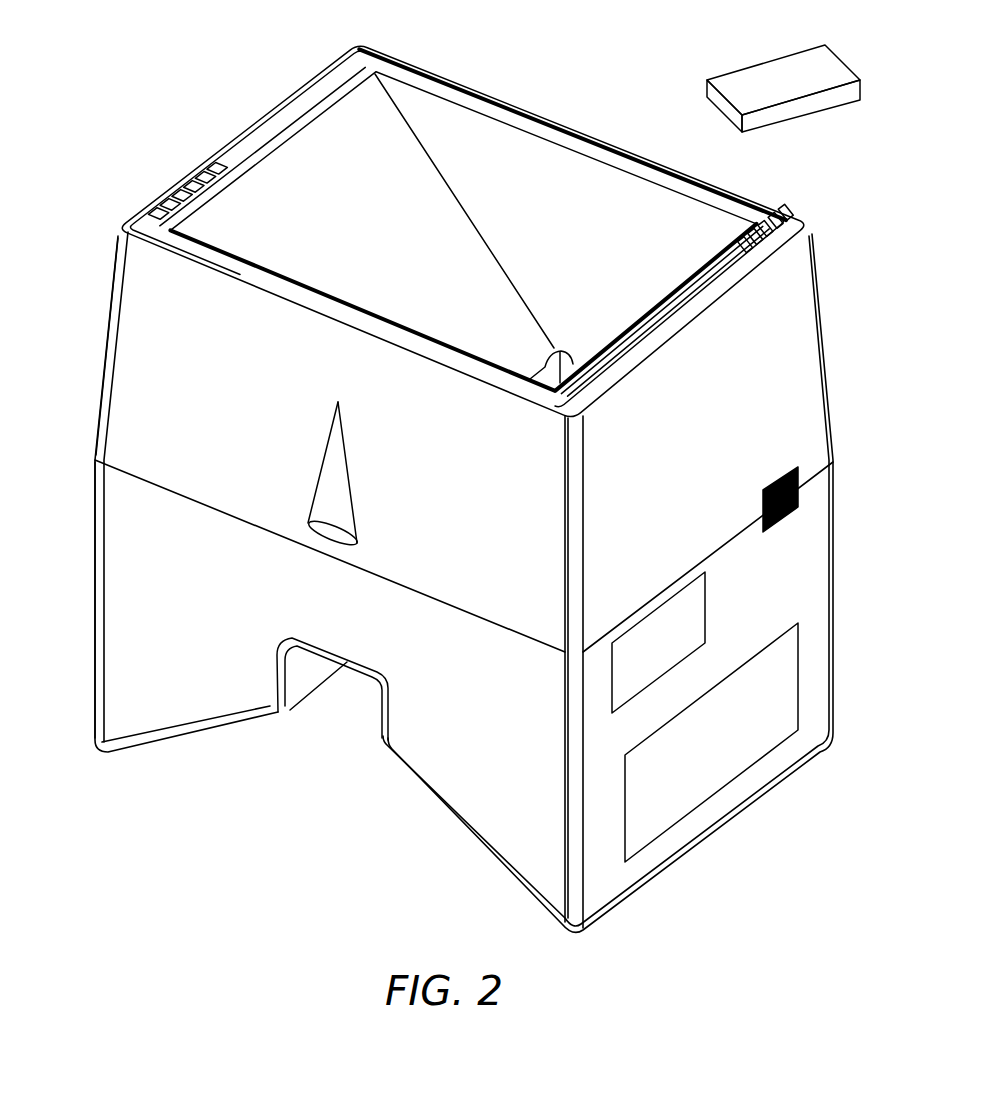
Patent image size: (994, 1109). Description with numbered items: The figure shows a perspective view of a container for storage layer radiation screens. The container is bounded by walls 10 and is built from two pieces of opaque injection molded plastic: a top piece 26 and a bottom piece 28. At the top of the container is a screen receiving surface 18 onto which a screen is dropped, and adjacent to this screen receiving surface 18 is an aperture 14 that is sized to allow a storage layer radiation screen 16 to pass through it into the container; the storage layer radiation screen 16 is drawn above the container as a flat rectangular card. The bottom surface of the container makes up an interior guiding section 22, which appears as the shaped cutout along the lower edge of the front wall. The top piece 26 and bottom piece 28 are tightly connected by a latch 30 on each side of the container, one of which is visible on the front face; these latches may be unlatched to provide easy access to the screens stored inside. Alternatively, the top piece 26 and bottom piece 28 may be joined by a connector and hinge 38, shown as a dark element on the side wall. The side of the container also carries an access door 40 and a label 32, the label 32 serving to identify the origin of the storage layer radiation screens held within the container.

The walls 10 is at (787, 370).
The aperture 14 is at (547, 368).
The storage layer radiation screen 16 is at (768, 83).
The screen receiving surface 18 is at (303, 172).
The interior guiding section 22 is at (310, 672).
The top piece 26 is at (117, 330).
The bottom piece 28 is at (95, 573).
The latch 30 is at (362, 563).
The label 32 is at (687, 642).
The connector and hinge 38 is at (777, 477).
The access door 40 is at (735, 760).